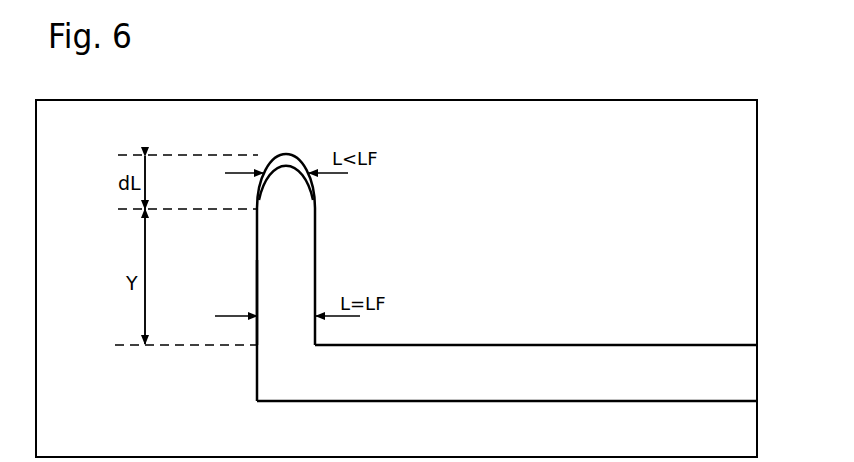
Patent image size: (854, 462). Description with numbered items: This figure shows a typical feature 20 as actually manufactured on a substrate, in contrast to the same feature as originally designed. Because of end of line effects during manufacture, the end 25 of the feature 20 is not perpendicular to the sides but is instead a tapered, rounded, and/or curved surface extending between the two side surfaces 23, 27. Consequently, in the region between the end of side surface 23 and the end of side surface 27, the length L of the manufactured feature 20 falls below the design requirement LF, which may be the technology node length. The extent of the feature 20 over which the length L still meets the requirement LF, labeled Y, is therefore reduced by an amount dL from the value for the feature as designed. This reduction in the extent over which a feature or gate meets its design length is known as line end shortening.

The feature 20 is at (443, 373).
The side surface 23 is at (315, 250).
The end 25 is at (292, 154).
The side surface 27 is at (256, 287).